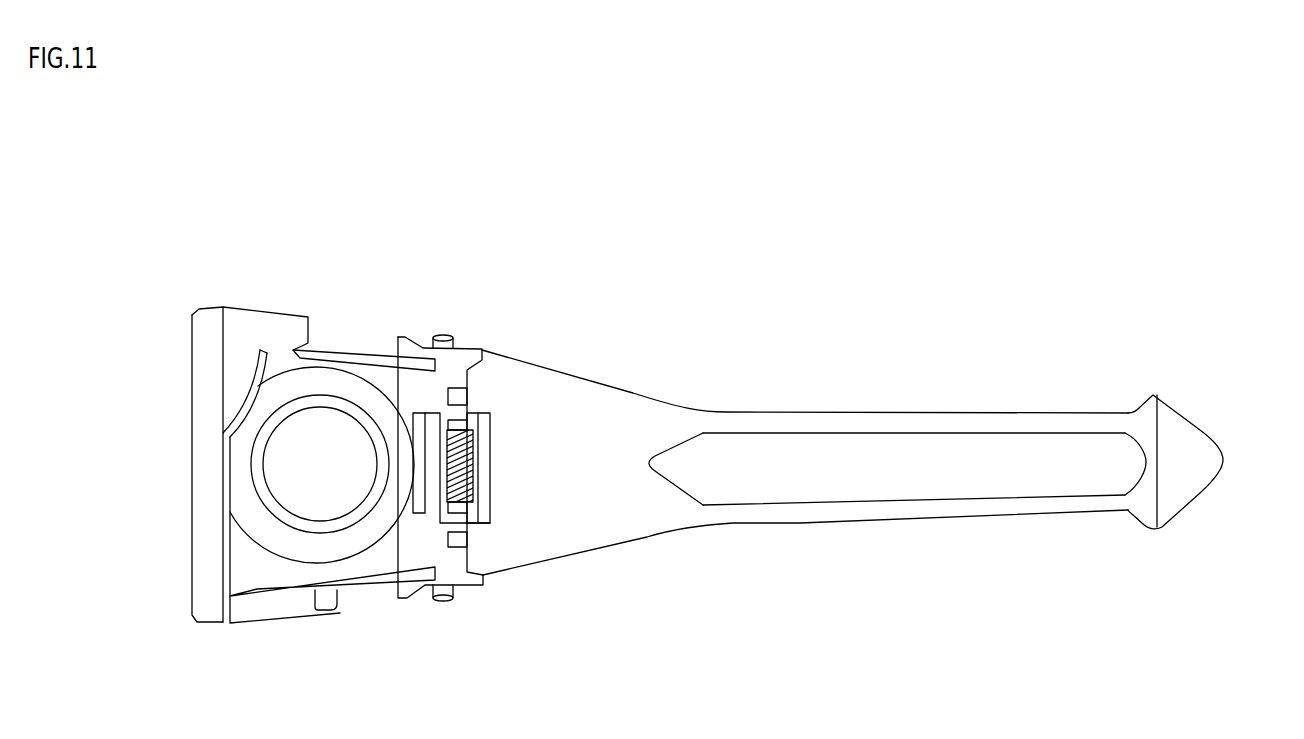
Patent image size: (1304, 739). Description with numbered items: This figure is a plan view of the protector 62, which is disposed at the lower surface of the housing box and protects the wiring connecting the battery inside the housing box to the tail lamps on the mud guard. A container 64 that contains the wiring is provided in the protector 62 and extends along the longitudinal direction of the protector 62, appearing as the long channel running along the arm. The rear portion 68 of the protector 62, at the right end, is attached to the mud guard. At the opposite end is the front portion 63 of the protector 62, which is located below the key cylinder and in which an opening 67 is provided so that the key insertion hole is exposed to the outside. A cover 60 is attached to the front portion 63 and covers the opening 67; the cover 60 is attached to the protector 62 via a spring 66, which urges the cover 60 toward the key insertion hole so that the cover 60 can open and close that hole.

The cover 60 is at (258, 522).
The protector 62 is at (881, 468).
The front portion 63 is at (242, 558).
The container 64 is at (895, 500).
The spring 66 is at (473, 482).
The opening 67 is at (253, 450).
The rear portion 68 is at (1190, 477).